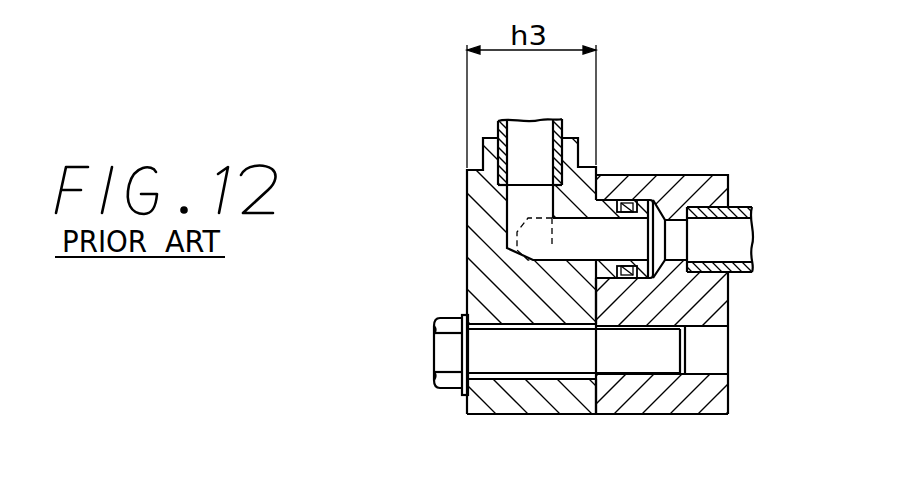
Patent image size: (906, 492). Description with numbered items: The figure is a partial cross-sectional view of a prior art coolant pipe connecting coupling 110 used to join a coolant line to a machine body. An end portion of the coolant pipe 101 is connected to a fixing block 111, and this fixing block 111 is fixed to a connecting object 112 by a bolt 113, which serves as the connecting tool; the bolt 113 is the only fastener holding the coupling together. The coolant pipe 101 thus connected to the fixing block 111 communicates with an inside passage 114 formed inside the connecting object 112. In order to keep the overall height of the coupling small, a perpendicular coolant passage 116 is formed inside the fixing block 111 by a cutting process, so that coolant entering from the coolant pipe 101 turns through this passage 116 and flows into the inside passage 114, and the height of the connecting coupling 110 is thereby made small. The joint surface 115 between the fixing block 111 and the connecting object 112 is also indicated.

The coolant pipe connecting coupling 110 is at (430, 171).
The coolant pipe 101 is at (563, 133).
The fixing block 111 is at (477, 263).
The connecting object 112 is at (677, 393).
The bolt 113 is at (447, 355).
The inside passage 114 is at (672, 237).
The joint surface 115 is at (602, 400).
The perpendicular coolant passage 116 is at (543, 208).